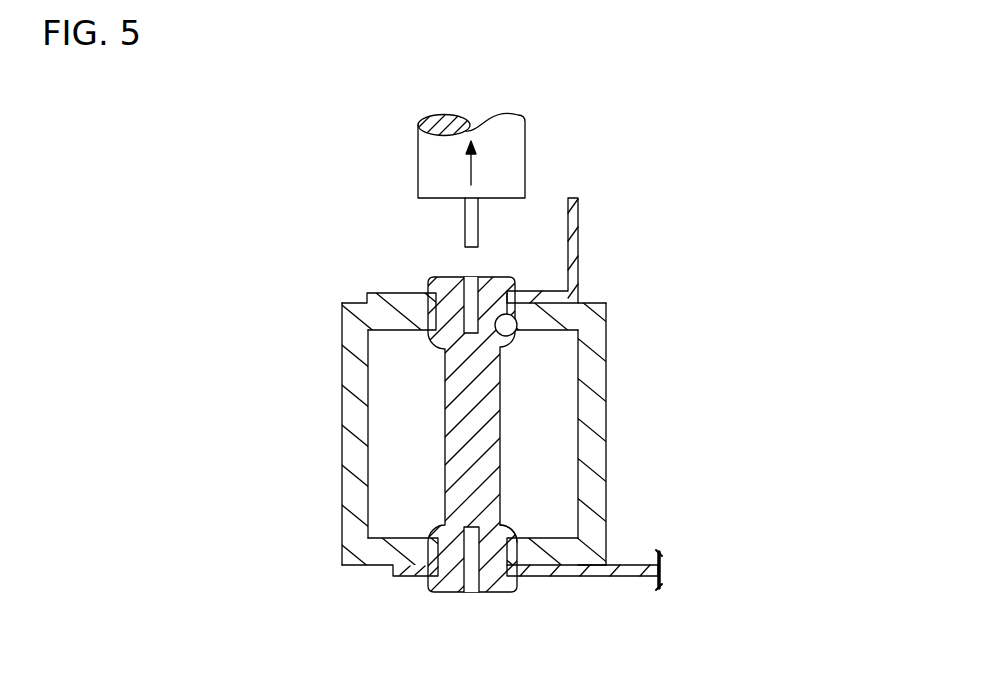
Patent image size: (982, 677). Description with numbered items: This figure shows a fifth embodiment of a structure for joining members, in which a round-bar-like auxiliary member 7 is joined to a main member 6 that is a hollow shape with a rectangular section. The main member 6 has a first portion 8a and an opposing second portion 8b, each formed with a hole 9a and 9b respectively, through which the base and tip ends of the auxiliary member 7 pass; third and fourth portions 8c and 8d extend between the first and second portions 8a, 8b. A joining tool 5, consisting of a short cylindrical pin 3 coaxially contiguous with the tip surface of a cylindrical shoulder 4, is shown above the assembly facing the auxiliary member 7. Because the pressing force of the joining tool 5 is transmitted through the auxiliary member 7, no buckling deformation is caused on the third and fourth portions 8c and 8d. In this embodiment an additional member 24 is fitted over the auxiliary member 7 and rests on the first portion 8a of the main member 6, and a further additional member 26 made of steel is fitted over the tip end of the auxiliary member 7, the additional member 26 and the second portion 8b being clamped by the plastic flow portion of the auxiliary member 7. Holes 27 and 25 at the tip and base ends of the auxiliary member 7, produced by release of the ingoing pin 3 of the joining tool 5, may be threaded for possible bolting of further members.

The pin 3 is at (470, 222).
The shoulder 4 is at (430, 149).
The joining tool 5 is at (476, 165).
The main member 6 is at (474, 366).
The auxiliary member 7 is at (455, 438).
The first portion 8a is at (538, 320).
The second portion 8b is at (575, 553).
The third portion 8c is at (352, 401).
The fourth portion 8d is at (595, 428).
The hole 9a is at (512, 333).
The hole 9b is at (504, 537).
The additional member 24 is at (578, 214).
The hole 25 is at (471, 290).
The additional member 26 is at (634, 577).
The hole 27 is at (474, 593).